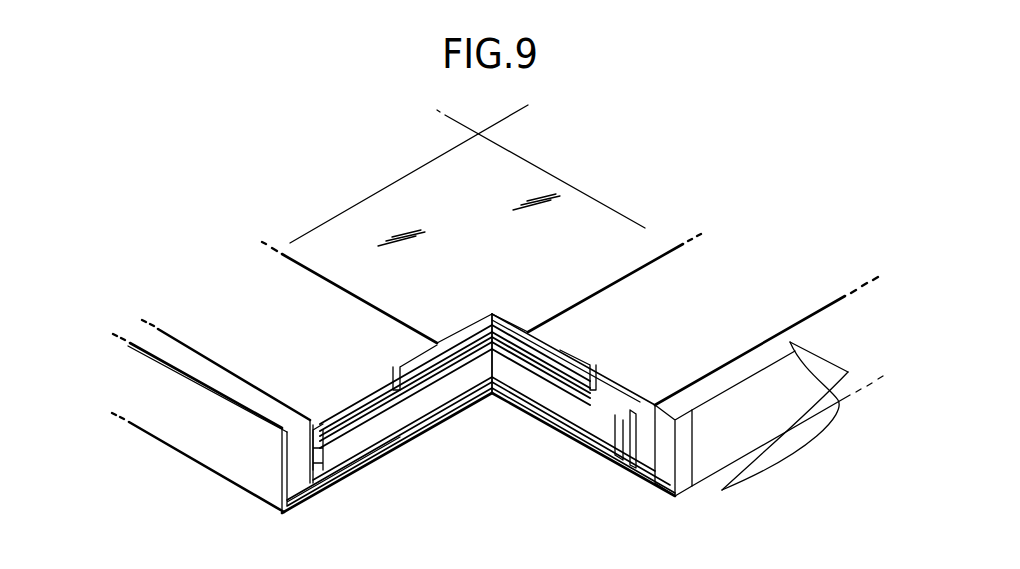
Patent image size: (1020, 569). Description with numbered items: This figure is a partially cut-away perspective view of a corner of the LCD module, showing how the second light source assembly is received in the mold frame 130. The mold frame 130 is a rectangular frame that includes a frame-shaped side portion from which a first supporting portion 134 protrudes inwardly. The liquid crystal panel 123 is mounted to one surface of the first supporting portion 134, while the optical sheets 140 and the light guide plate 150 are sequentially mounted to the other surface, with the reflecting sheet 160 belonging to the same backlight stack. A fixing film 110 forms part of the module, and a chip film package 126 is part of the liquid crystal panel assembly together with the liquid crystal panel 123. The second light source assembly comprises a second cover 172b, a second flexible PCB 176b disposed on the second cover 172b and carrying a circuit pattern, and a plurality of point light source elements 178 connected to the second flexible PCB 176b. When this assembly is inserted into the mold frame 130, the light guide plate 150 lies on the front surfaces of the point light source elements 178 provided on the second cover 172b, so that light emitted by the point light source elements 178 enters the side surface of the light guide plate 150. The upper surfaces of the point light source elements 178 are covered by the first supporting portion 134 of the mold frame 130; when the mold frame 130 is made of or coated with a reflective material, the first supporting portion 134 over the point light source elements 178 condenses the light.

The fixing film 110 is at (603, 290).
The liquid crystal panel 123 is at (475, 338).
The chip film package 126 is at (742, 470).
The mold frame 130 is at (663, 478).
The first supporting portion 134 is at (620, 397).
The optical sheets 140 is at (517, 352).
The light guide plate 150 is at (510, 378).
The reflecting sheet 160 is at (528, 405).
The second cover 172b is at (248, 478).
The second flexible PCB 176b is at (576, 440).
The point light source elements 178 is at (612, 456).